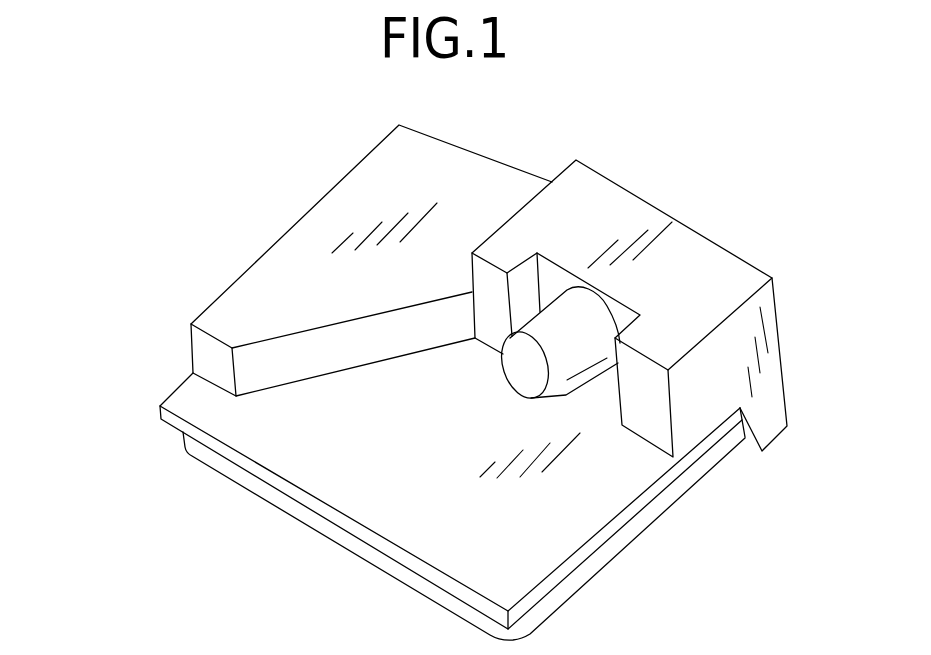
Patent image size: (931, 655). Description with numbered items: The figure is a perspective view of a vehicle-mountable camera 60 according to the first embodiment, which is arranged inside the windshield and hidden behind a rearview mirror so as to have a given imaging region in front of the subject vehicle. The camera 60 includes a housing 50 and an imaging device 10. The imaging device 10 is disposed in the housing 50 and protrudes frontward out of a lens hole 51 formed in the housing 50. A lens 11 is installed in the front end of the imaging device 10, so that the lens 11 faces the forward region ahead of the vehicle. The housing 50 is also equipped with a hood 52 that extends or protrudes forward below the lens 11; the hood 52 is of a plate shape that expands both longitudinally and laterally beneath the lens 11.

The camera 60 is at (176, 259).
The housing 50 is at (452, 153).
The lens hole 51 is at (606, 309).
The hood 52 is at (413, 533).
The imaging device 10 is at (573, 307).
The lens 11 is at (523, 381).